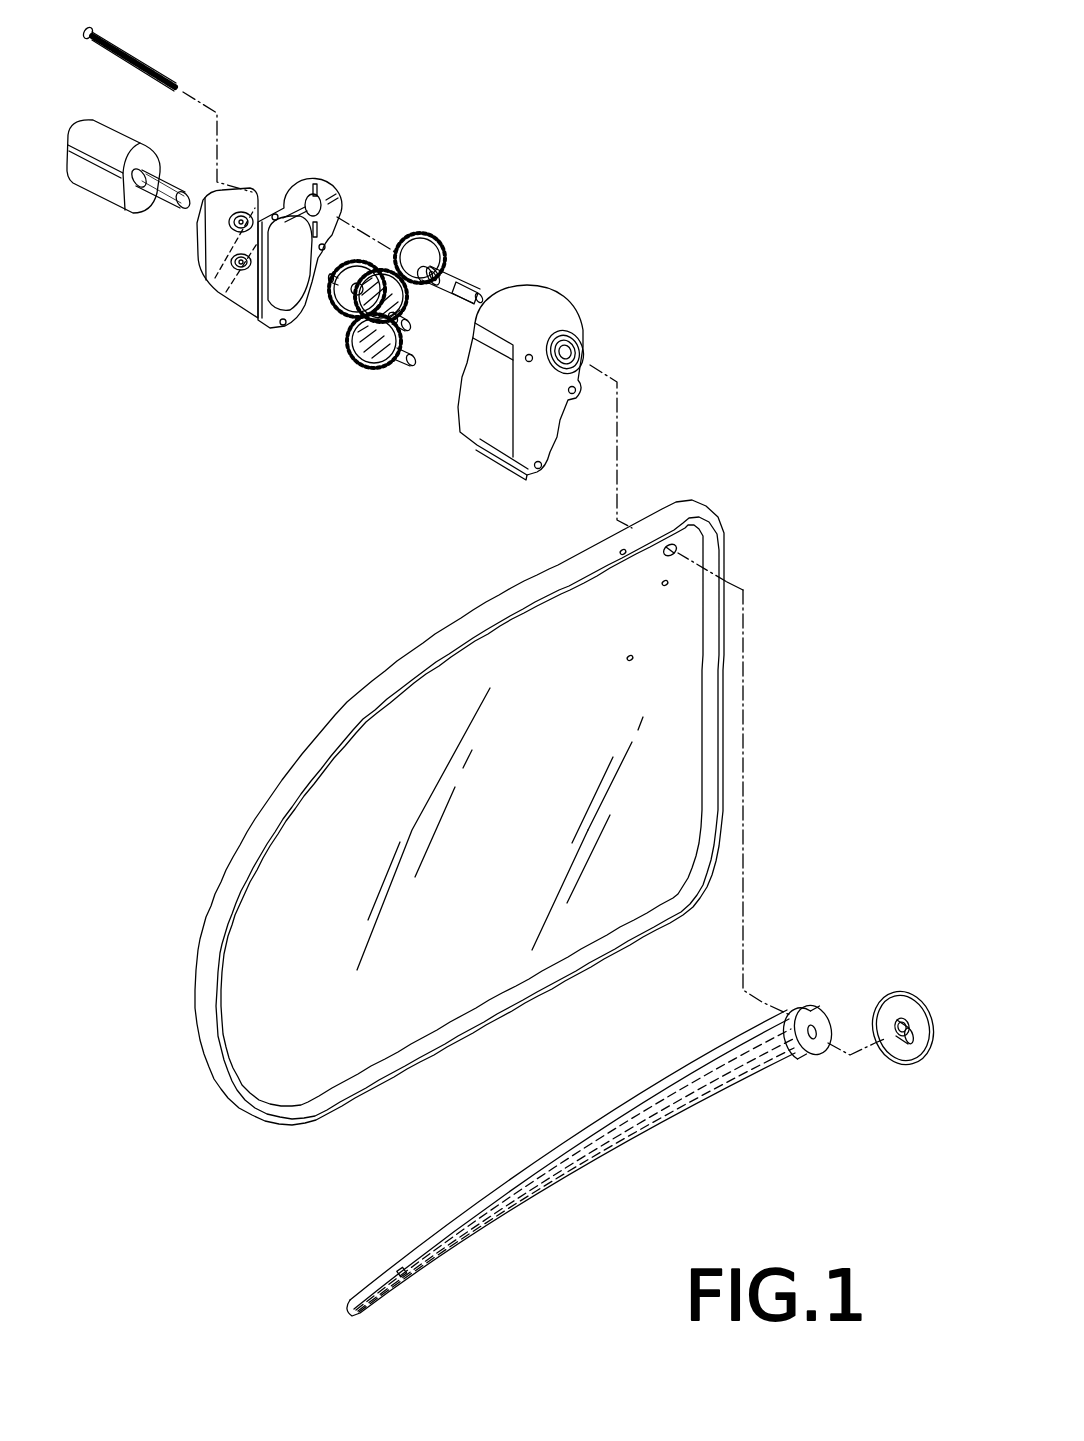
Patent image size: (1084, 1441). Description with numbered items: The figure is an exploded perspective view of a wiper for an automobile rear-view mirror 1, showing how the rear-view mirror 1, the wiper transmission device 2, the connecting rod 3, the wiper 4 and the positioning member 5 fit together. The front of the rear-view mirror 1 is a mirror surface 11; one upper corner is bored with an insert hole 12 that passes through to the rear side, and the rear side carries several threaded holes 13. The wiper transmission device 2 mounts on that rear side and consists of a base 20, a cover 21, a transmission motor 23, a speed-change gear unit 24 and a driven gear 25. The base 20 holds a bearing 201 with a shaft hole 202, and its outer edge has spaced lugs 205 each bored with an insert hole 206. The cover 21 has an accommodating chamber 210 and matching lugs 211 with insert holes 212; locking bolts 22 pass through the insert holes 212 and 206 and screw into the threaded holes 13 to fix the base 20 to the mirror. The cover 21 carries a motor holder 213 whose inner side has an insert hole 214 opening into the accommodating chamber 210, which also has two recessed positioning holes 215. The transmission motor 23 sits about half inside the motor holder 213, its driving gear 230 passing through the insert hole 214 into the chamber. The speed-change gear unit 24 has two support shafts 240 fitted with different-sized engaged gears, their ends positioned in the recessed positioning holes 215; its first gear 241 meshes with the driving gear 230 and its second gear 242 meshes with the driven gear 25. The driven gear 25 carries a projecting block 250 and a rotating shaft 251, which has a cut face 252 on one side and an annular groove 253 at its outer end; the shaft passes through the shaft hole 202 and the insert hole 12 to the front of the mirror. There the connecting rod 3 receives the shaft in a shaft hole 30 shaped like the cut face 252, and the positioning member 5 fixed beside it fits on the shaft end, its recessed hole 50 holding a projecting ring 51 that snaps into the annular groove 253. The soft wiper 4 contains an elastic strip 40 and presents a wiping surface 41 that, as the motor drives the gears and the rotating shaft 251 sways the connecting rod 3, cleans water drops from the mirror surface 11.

The rear-view mirror 1 is at (290, 775).
The mirror surface 11 is at (273, 1043).
The insert hole 12 is at (677, 547).
The threaded holes 13 is at (615, 548).
The wiper transmission device 2 is at (480, 186).
The base 20 is at (545, 308).
The bearing 201 is at (575, 337).
The shaft hole 202 is at (563, 347).
The lugs 205 is at (500, 452).
The insert hole 206 is at (538, 470).
The cover 21 is at (318, 176).
The accommodating chamber 210 is at (266, 282).
The lugs 211 is at (282, 288).
The insert hole 212 is at (285, 330).
The motor holder 213 is at (203, 237).
The insert hole 214 is at (232, 295).
The recessed positioning holes 215 is at (240, 322).
The locking bolts 22 is at (145, 62).
The transmission motor 23 is at (115, 137).
The driving gear 230 is at (167, 187).
The speed-change gear unit 24 is at (368, 370).
The support shafts 240 is at (402, 353).
The first gear 241 is at (356, 347).
The second gear 242 is at (405, 312).
The driven gear 25 is at (430, 237).
The projecting block 250 is at (436, 290).
The rotating shaft 251 is at (449, 278).
The cut face 252 is at (466, 288).
The annular groove 253 is at (484, 297).
The connecting rod 3 is at (813, 1017).
The shaft hole 30 is at (812, 1040).
The wiper 4 is at (390, 1285).
The elastic strip 40 is at (512, 1217).
The wiping surface 41 is at (493, 1180).
The positioning member 5 is at (892, 1003).
The disc hub 50 is at (903, 1020).
The projecting ring 51 is at (897, 1035).